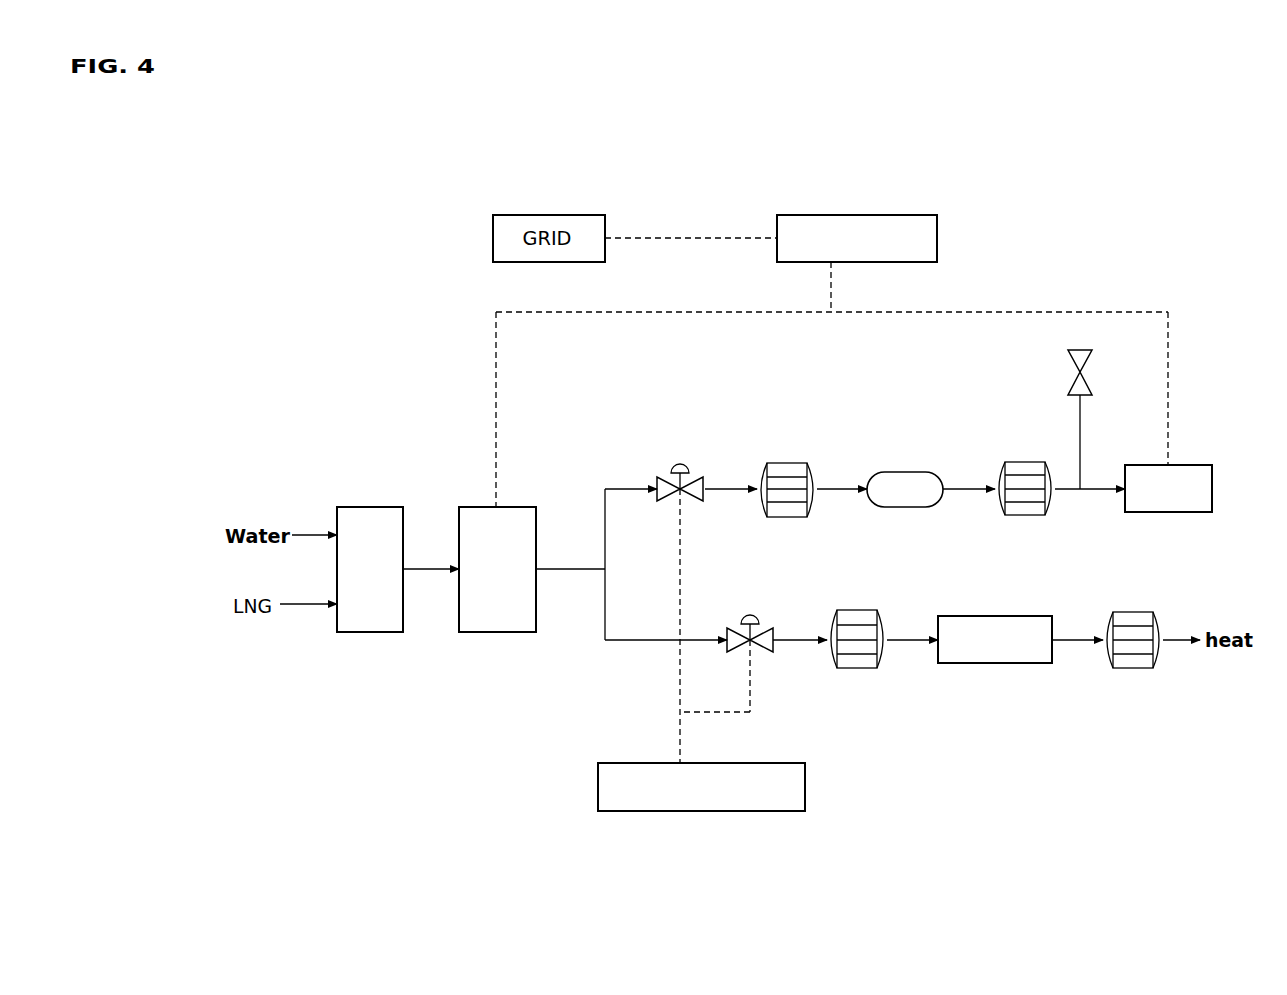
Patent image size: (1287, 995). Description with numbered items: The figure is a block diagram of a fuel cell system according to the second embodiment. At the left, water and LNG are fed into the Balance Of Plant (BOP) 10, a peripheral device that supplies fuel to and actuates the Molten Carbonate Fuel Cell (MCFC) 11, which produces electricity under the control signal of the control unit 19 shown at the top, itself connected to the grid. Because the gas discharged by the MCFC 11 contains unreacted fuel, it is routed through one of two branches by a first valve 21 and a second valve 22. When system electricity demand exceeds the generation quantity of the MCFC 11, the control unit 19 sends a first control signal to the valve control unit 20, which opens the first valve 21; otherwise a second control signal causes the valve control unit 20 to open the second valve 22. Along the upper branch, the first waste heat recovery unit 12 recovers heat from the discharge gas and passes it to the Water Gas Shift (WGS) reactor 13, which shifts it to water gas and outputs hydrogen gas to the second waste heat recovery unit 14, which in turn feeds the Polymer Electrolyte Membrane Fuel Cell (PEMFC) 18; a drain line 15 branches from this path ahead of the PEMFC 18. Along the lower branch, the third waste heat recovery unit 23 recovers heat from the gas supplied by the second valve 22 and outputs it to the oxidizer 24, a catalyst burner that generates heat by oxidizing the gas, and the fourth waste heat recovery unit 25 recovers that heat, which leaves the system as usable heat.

The Balance Of Plant (BOP) 10 is at (369, 507).
The Molten Carbonate Fuel Cell (MCFC) 11 is at (478, 507).
The first waste heat recovery unit 12 is at (786, 463).
The Water Gas Shift (WGS) reactor 13 is at (905, 472).
The second waste heat recovery unit 14 is at (1024, 462).
The drain line 15 is at (1068, 362).
The Polymer Electrolyte Membrane Fuel Cell (PEMFC) 18 is at (1140, 465).
The control unit 19 is at (831, 215).
The valve control unit 20 is at (638, 763).
The first valve 21 is at (672, 477).
The second valve 22 is at (745, 628).
The third waste heat recovery unit 23 is at (856, 610).
The oxidizer 24 is at (993, 616).
The fourth waste heat recovery unit 25 is at (1133, 612).